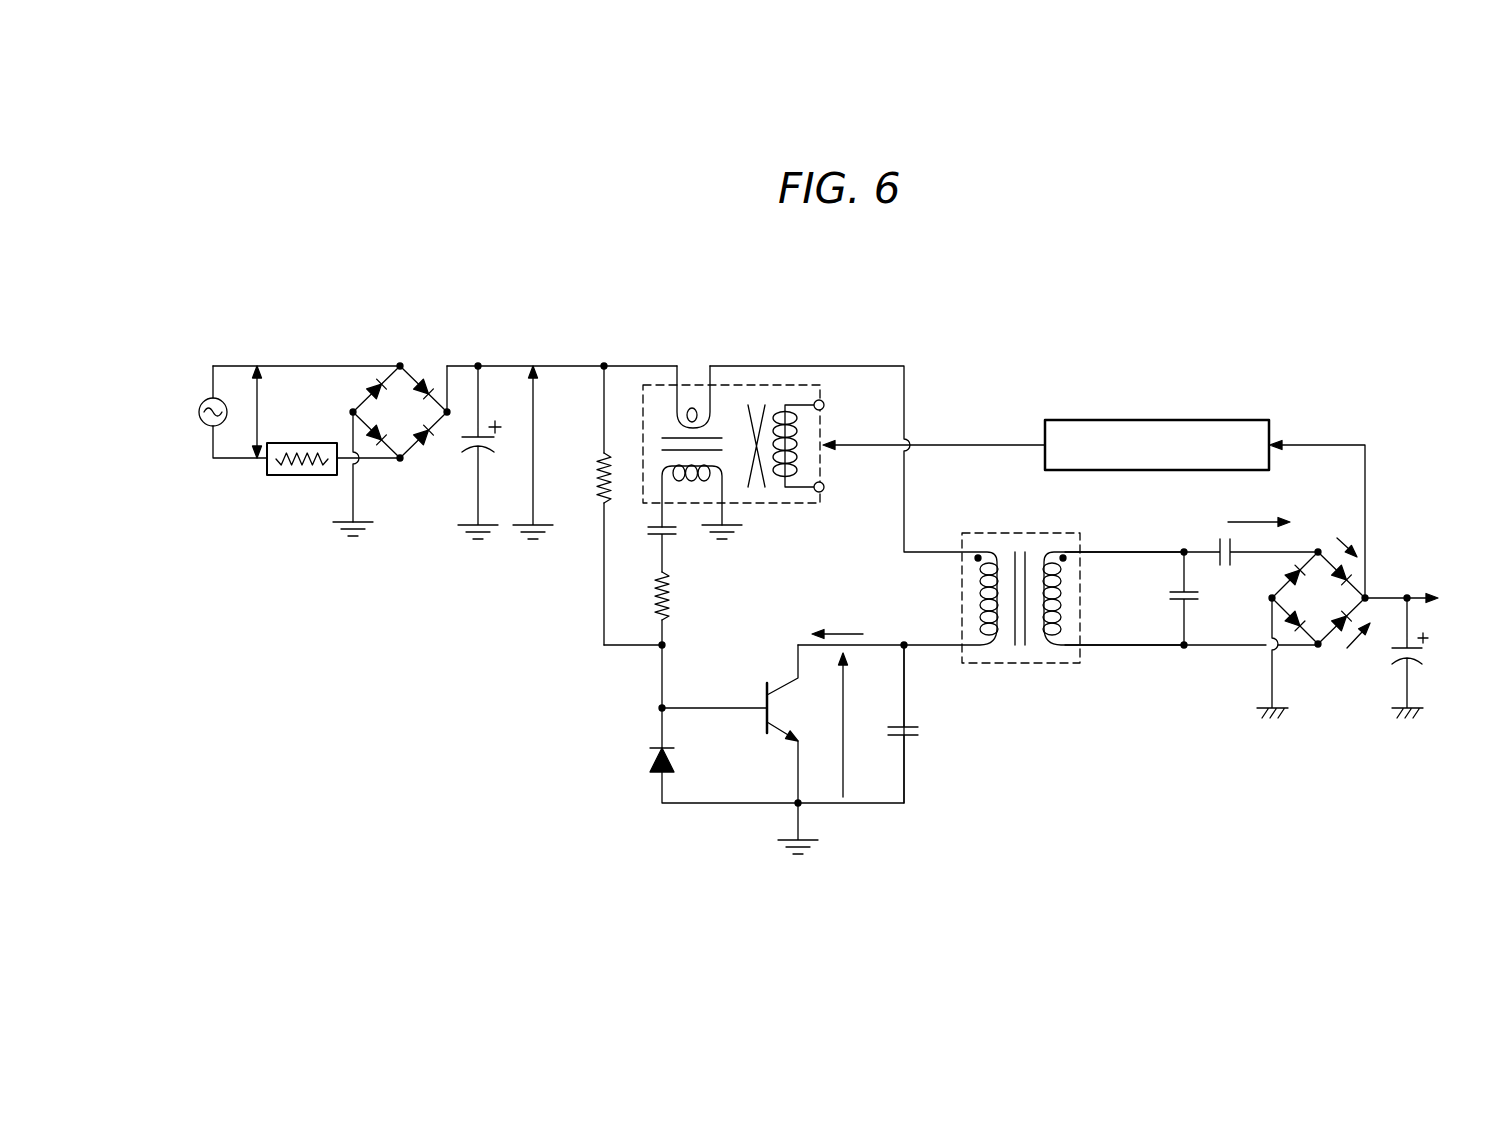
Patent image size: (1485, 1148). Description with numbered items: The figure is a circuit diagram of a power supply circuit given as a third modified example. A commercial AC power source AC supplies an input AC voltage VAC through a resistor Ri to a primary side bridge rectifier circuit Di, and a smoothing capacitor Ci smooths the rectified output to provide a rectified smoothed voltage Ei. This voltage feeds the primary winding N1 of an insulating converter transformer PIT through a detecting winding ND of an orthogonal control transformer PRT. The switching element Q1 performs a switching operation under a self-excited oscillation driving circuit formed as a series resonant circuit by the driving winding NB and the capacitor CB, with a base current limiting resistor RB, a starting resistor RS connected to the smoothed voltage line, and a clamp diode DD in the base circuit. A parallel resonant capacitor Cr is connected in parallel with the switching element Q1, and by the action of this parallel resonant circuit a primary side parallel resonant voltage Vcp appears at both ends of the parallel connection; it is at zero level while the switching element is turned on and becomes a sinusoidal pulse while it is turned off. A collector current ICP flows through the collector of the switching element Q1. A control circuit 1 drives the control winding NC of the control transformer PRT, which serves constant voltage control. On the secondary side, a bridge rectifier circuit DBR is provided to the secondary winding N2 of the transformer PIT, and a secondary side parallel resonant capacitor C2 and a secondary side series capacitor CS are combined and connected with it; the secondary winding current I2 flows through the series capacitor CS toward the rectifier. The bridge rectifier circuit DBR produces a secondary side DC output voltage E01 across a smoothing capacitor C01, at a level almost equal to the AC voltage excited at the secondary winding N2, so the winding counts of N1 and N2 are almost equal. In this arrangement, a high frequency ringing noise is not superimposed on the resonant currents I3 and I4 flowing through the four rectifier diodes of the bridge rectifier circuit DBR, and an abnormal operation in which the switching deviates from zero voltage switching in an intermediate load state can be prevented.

The commercial AC power source AC is at (217, 412).
The input AC voltage VAC is at (255, 412).
The resistor Ri is at (333, 473).
The bridge rectifier circuit Di is at (411, 424).
The smoothing capacitor Ci is at (483, 452).
The rectified smoothed voltage Ei is at (533, 452).
The starting resistor RS is at (588, 505).
The detecting winding ND is at (690, 400).
The driving winding NB is at (687, 487).
The control winding NC is at (798, 453).
The orthogonal control transformer PRT is at (731, 461).
The resonant capacitor CB is at (645, 545).
The base current limiting resistor RB is at (645, 640).
The switching element Q1 is at (740, 749).
The clamp diode DD is at (705, 755).
The primary side parallel resonant voltage Vcp is at (847, 725).
The collector current ICP is at (837, 623).
The parallel resonant capacitor Cr is at (872, 724).
The insulating converter transformer PIT is at (1021, 583).
The primary winding N1 is at (974, 590).
The secondary winding N2 is at (1068, 590).
The secondary side parallel resonant capacitor C2 is at (1244, 598).
The secondary side series capacitor CS is at (1251, 560).
The secondary winding current I2 is at (1259, 510).
The resonant current I3 is at (1348, 537).
The resonant current I4 is at (1362, 645).
The bridge rectifier circuit DBR is at (1340, 607).
The secondary side DC output voltage E01 is at (1425, 598).
The smoothing capacitor C01 is at (1435, 658).
The control circuit 1 is at (1158, 420).